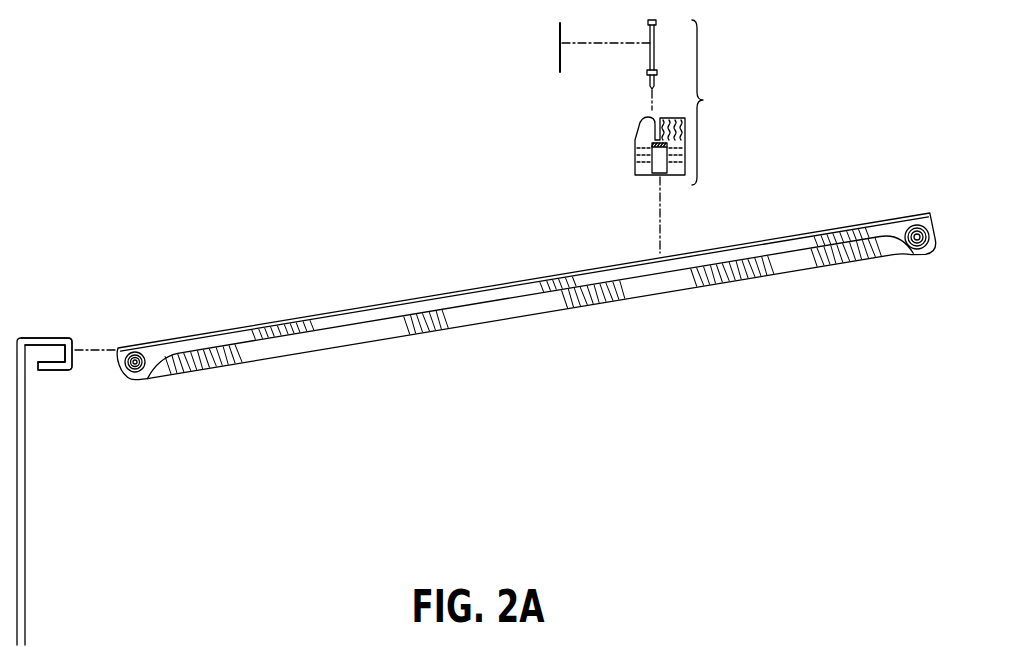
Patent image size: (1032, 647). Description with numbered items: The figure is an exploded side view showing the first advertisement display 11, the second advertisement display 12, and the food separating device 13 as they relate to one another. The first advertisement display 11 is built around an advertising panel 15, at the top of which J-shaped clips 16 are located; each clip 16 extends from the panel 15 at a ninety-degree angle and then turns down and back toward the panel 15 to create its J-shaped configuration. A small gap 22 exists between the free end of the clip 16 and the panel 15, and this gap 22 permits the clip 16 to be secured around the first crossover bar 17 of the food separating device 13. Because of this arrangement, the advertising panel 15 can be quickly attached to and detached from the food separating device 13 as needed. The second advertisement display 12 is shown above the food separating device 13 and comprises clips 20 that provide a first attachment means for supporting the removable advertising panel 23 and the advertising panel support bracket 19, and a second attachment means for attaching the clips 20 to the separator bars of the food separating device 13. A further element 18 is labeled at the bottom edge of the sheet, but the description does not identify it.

The first advertisement display 11 is at (78, 480).
The second advertisement display 12 is at (711, 102).
The food separating device 13 is at (788, 295).
The panel 15 is at (25, 547).
The J-shaped clip 16 is at (50, 338).
The first crossover bar 17 is at (133, 343).
The lower slat 18 is at (773, 643).
The advertising panel support bracket 19 is at (649, 23).
The clip 20 is at (634, 153).
The small gap 22 is at (32, 368).
The removable advertising panel 23 is at (559, 33).